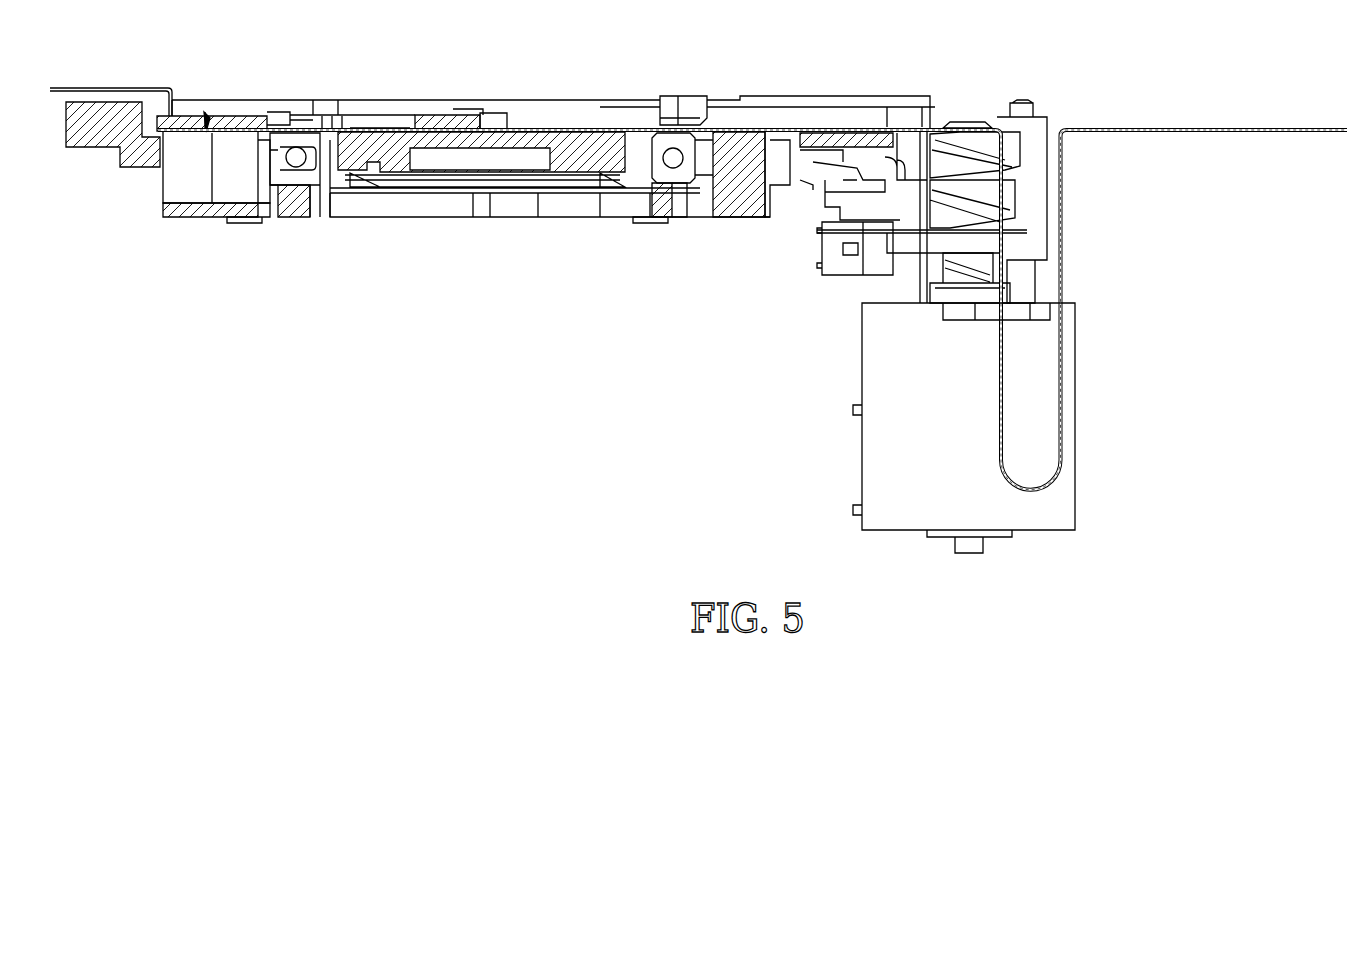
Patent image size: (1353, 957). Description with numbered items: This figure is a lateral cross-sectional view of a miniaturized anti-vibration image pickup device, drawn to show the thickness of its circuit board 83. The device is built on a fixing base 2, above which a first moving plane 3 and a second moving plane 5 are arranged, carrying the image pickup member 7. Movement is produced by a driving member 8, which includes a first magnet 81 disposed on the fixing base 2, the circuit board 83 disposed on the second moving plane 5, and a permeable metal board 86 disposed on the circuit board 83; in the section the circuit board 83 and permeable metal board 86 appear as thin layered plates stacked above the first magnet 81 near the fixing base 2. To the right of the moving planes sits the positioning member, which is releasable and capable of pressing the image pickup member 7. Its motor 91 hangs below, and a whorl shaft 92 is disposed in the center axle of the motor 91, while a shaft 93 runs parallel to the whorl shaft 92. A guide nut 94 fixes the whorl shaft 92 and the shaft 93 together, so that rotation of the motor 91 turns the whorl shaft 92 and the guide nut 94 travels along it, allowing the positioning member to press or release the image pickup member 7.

The fixing base 2 is at (78, 150).
The first moving plane 3 is at (492, 118).
The second moving plane 5 is at (292, 200).
The image pickup member 7 is at (386, 160).
The driving member 8 is at (206, 112).
The first magnet 81 is at (160, 190).
The circuit board 83 is at (244, 126).
The permeable metal board 86 is at (207, 212).
The motor 91 is at (1075, 426).
The whorl shaft 92 is at (964, 122).
The shaft 93 is at (1020, 105).
The guide nut 94 is at (1040, 132).